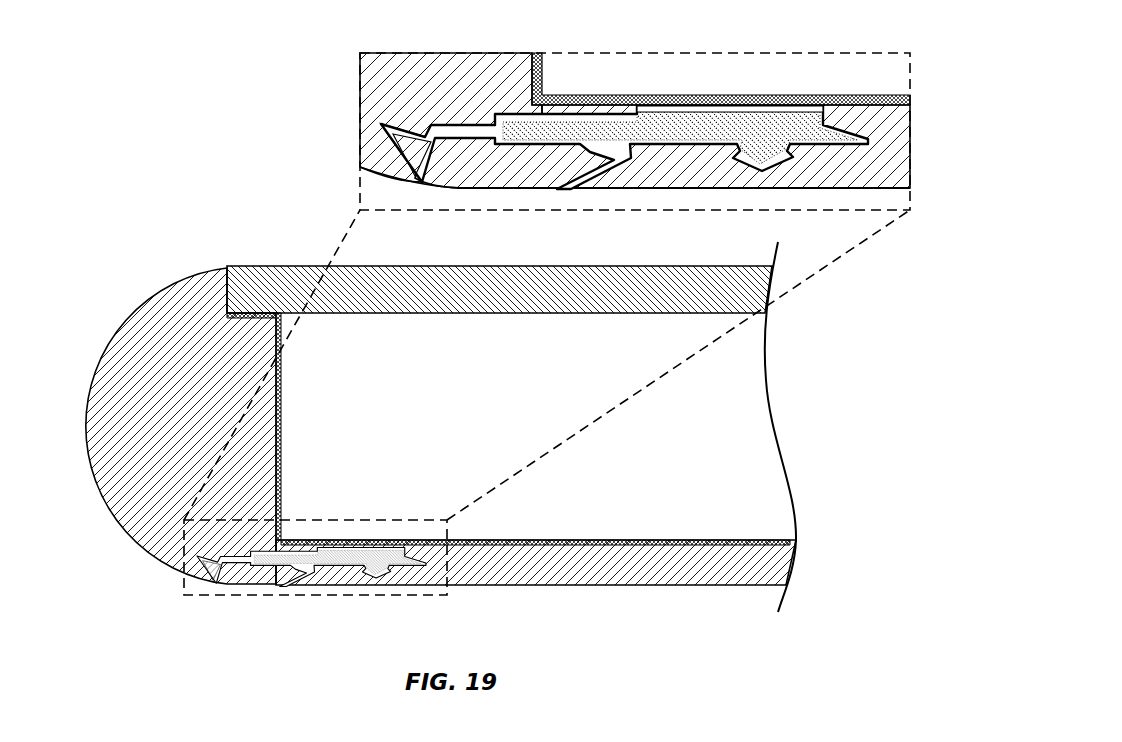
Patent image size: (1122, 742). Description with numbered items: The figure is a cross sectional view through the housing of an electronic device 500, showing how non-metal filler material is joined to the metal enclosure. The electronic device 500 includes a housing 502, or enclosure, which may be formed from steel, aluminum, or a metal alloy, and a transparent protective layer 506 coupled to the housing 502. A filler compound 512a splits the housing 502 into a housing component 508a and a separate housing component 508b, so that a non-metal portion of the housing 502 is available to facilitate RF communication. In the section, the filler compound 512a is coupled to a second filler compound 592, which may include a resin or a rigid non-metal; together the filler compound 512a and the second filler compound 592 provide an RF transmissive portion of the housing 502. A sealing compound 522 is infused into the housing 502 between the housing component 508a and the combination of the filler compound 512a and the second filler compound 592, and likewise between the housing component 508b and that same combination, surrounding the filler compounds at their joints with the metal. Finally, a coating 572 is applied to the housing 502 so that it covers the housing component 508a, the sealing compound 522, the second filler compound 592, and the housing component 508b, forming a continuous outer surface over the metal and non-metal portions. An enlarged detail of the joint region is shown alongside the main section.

The electronic device 500 is at (137, 192).
The housing 502 is at (72, 353).
The transparent protective layer 506 is at (278, 265).
The housing component 508a is at (195, 406).
The housing component 508b is at (622, 587).
The filler compound 512a is at (520, 176).
The sealing compound 522 is at (565, 190).
The coating 572 is at (680, 95).
The second filler compound 592 is at (755, 97).